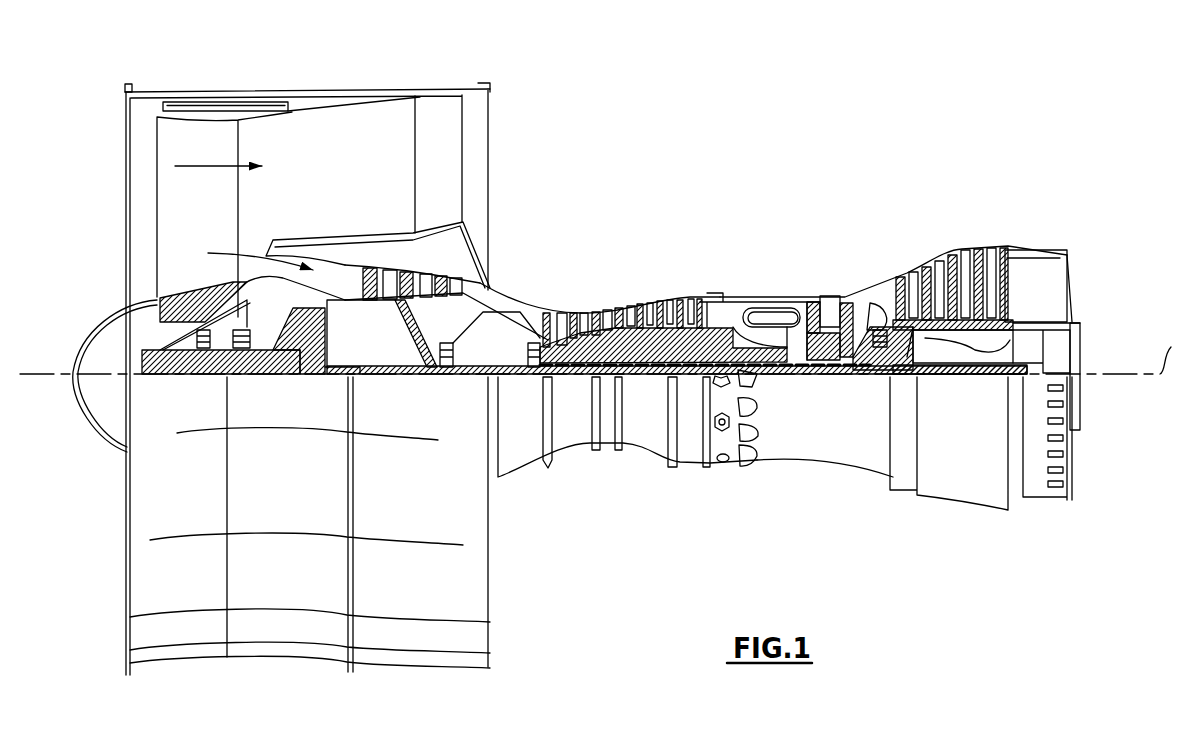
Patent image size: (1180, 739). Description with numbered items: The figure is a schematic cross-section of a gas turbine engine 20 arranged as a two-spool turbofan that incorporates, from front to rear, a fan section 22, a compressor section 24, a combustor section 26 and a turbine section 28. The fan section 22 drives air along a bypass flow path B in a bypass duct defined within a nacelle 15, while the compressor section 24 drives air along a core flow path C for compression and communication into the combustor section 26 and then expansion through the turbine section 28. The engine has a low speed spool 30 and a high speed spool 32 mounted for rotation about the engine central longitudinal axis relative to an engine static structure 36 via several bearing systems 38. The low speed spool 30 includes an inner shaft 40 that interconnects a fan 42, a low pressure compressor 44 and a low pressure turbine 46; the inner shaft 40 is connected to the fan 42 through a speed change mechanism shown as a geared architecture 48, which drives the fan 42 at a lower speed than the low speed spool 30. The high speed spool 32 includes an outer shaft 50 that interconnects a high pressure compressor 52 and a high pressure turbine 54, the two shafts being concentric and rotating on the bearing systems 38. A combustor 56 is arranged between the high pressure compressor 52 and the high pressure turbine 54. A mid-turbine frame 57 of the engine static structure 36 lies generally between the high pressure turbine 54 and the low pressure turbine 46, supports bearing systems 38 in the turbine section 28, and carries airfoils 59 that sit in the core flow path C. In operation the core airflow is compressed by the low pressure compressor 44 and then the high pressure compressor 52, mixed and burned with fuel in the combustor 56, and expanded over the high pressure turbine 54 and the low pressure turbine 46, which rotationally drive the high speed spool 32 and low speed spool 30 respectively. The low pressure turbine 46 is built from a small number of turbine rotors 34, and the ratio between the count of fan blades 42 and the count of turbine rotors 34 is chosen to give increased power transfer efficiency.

The nacelle 15 is at (308, 100).
The gas turbine engine 20 is at (768, 142).
The fan section 22 is at (240, 86).
The compressor section 24 is at (540, 283).
The combustor section 26 is at (762, 268).
The turbine section 28 is at (910, 237).
The low speed spool 30 is at (647, 380).
The high speed spool 32 is at (693, 312).
The turbine rotors 34 is at (957, 346).
The engine static structure 36 is at (687, 467).
The bearing systems 38 is at (447, 363).
The inner shaft 40 is at (510, 377).
The fan 42 is at (212, 221).
The low pressure compressor 44 is at (410, 282).
The low pressure turbine 46 is at (953, 267).
The geared architecture 48 is at (317, 358).
The outer shaft 50 is at (777, 363).
The high pressure compressor 52 is at (614, 343).
The high pressure turbine 54 is at (827, 297).
The combustor 56 is at (763, 318).
The mid-turbine frame 57 is at (870, 290).
The airfoils 59 is at (907, 357).
The bypass flow path B is at (210, 165).
The core flow path C is at (250, 254).